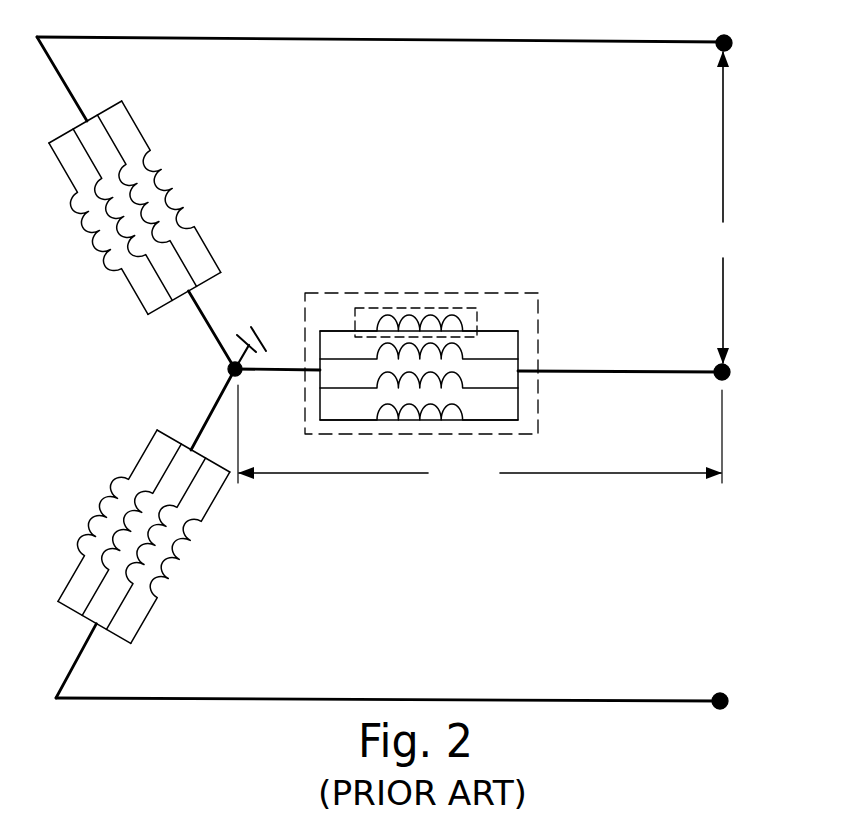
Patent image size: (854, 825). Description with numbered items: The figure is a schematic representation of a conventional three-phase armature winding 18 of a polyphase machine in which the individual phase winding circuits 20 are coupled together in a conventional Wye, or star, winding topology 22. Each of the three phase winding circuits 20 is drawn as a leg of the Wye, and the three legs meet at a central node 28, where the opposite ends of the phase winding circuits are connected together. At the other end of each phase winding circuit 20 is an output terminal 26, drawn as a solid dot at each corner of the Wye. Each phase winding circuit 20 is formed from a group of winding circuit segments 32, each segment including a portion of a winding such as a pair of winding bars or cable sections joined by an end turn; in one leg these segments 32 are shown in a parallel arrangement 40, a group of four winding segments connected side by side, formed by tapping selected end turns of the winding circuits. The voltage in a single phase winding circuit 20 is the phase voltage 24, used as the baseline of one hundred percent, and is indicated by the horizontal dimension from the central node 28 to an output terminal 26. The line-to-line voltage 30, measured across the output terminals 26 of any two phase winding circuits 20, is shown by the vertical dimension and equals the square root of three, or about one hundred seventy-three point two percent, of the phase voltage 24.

The armature winding 18 is at (120, 368).
The phase winding circuit 20 is at (323, 321).
The Wye winding topology 22 is at (301, 274).
The phase voltage 24 is at (462, 493).
The output terminal 26 is at (731, 47).
The central node 28 is at (229, 363).
The line-to-line voltage 30 is at (749, 222).
The winding circuit segment 32 is at (134, 246).
The parallel arrangement 40 is at (387, 292).